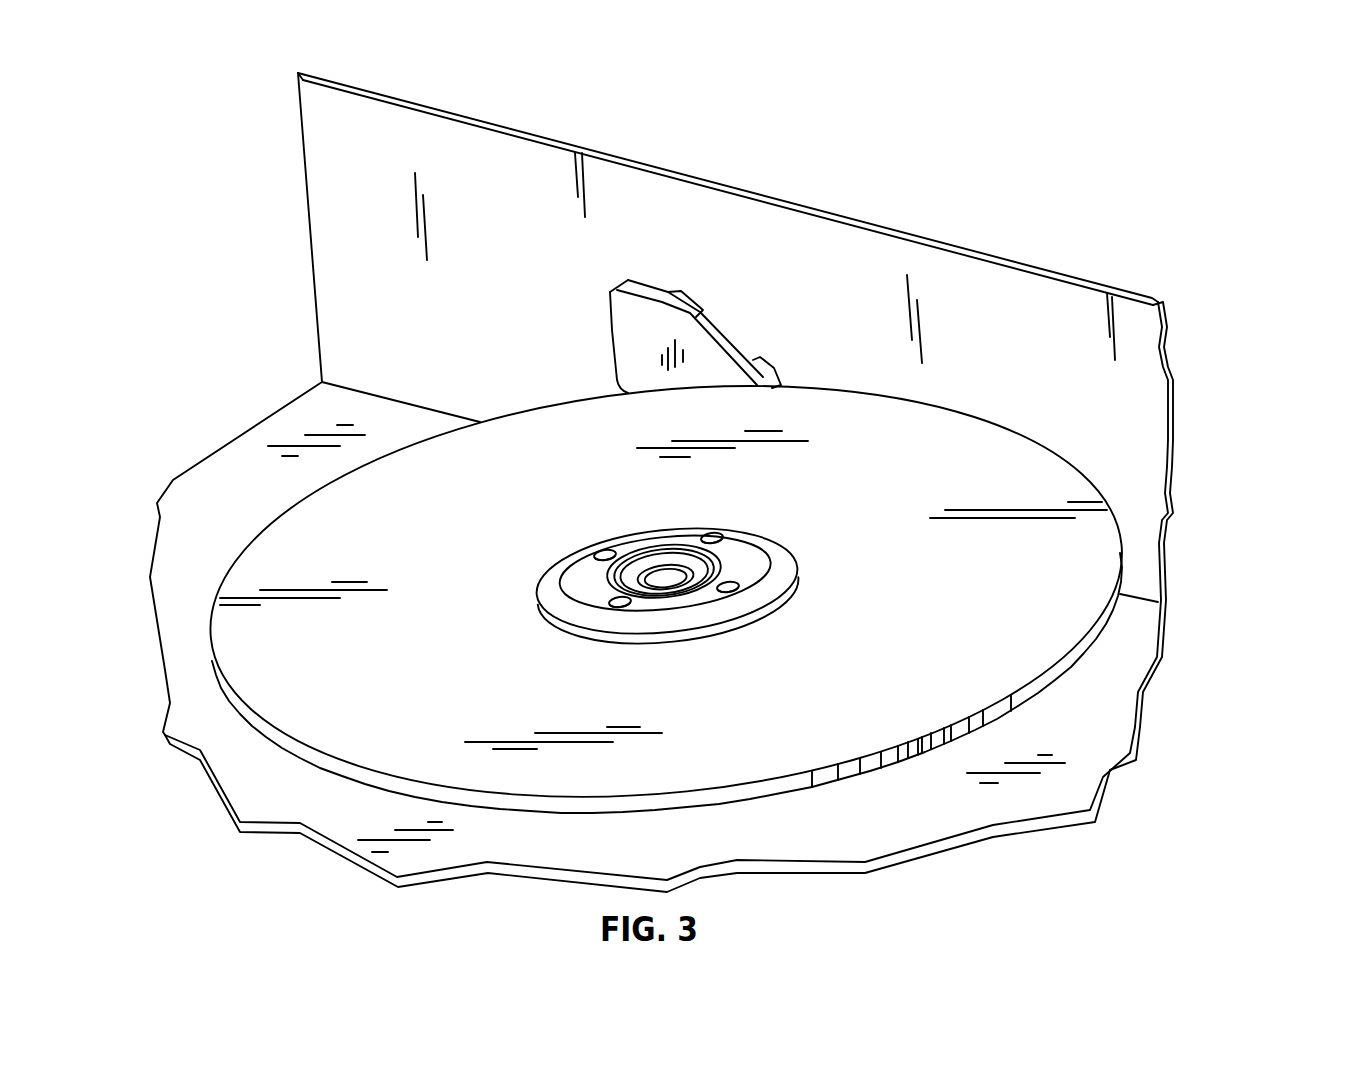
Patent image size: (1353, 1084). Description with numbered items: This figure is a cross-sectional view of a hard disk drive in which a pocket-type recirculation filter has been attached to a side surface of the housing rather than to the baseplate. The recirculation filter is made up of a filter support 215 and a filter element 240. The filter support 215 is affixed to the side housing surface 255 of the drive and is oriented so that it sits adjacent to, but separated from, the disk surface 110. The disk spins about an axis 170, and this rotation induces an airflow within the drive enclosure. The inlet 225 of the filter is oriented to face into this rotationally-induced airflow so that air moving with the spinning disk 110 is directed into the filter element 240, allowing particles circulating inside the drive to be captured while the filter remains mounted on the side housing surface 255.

The disk surface 110 is at (1058, 634).
The axis 170 is at (658, 577).
The filter support 215 is at (655, 280).
The inlet 225 is at (727, 314).
The filter element 240 is at (628, 325).
The side housing surface 255 is at (875, 277).